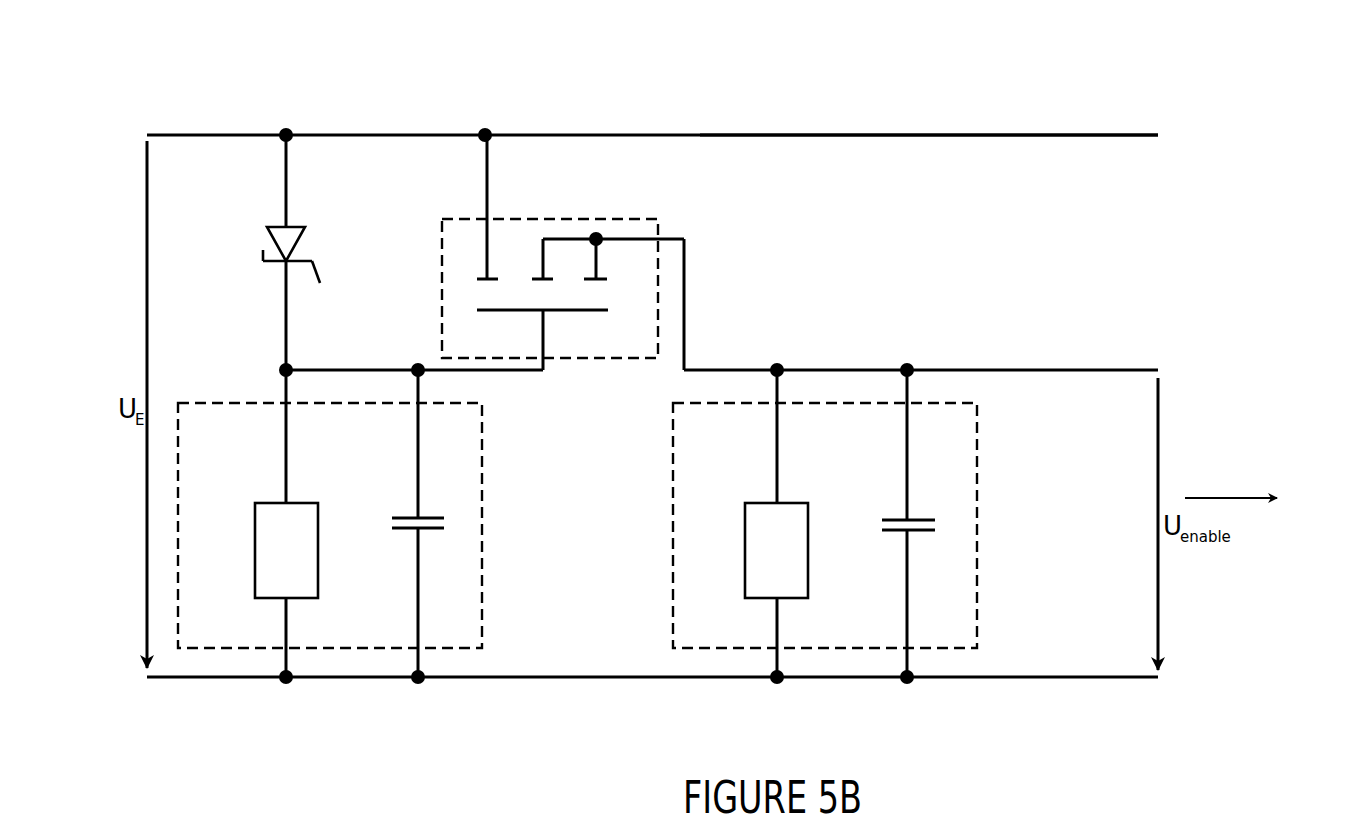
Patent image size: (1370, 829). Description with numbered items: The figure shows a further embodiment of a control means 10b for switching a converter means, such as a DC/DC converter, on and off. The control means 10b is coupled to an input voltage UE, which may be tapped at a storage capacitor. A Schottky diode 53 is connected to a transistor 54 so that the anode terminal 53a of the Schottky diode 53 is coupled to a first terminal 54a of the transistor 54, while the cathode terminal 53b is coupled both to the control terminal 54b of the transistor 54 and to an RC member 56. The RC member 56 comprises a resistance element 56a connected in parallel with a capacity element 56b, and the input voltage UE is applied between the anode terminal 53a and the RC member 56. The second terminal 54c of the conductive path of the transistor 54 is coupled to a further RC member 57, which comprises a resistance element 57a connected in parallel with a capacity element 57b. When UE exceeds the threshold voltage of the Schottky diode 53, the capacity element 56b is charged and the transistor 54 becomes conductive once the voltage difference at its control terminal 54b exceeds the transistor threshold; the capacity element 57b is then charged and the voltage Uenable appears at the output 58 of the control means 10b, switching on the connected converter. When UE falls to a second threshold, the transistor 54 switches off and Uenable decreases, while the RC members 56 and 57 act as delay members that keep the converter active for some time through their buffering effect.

The control means 10b is at (1016, 118).
The Schottky diode 53 is at (297, 252).
The anode terminal 53a is at (285, 225).
The cathode terminal 53b is at (288, 259).
The transistor 54 is at (571, 263).
The first terminal 54a is at (485, 207).
The control terminal 54b is at (580, 312).
The second terminal 54c is at (597, 244).
The RC member 56 is at (360, 523).
The resistance element 56a is at (255, 540).
The capacity element 56b is at (405, 530).
The further RC member 57 is at (797, 523).
The resistance element 57a is at (745, 545).
The capacity element 57b is at (893, 532).
The output 58 is at (1276, 492).